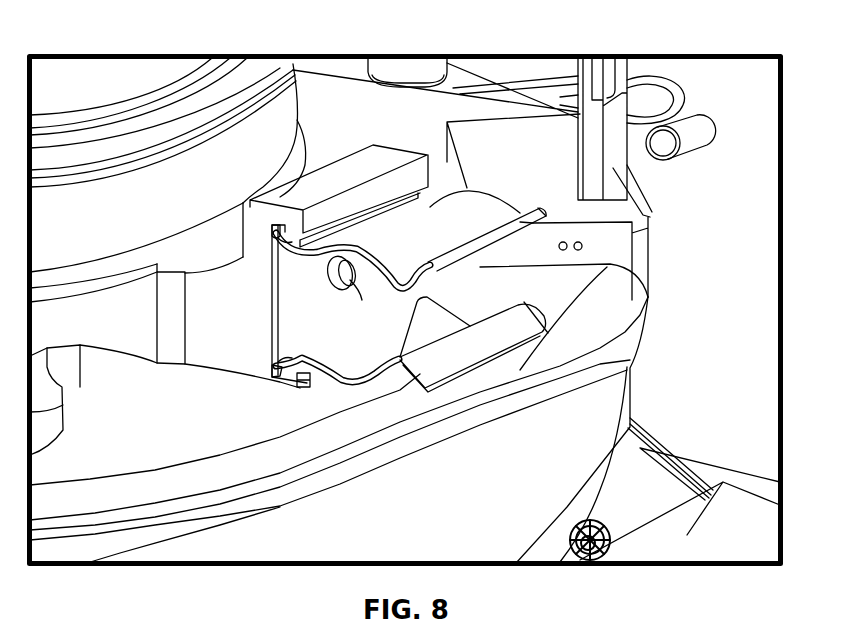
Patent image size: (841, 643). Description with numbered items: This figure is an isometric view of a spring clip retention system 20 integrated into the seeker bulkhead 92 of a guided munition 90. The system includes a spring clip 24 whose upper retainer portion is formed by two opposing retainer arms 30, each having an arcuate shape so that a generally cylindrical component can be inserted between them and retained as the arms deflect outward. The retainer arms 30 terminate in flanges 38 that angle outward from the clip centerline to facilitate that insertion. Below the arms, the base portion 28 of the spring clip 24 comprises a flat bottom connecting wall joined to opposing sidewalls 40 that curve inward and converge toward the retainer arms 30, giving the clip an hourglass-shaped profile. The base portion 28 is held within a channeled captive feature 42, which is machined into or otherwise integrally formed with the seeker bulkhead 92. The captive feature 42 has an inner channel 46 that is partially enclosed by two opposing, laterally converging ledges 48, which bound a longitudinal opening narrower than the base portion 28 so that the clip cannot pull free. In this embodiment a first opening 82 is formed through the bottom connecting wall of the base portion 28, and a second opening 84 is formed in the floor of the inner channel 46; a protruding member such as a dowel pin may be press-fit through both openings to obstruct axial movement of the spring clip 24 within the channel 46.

The spring clip retention system 20 is at (229, 196).
The spring clip 24 is at (476, 203).
The base portion 28 is at (262, 302).
The retainer arms 30 is at (450, 186).
The flanges 38 is at (517, 233).
The sidewalls 40 is at (288, 235).
The captive feature 42 is at (366, 156).
The inner channel 46 is at (274, 240).
The ledges 48 is at (335, 236).
The first opening 82 is at (333, 290).
The second opening 84 is at (350, 280).
The guided munition 90 is at (63, 230).
The seeker bulkhead 92 is at (129, 433).